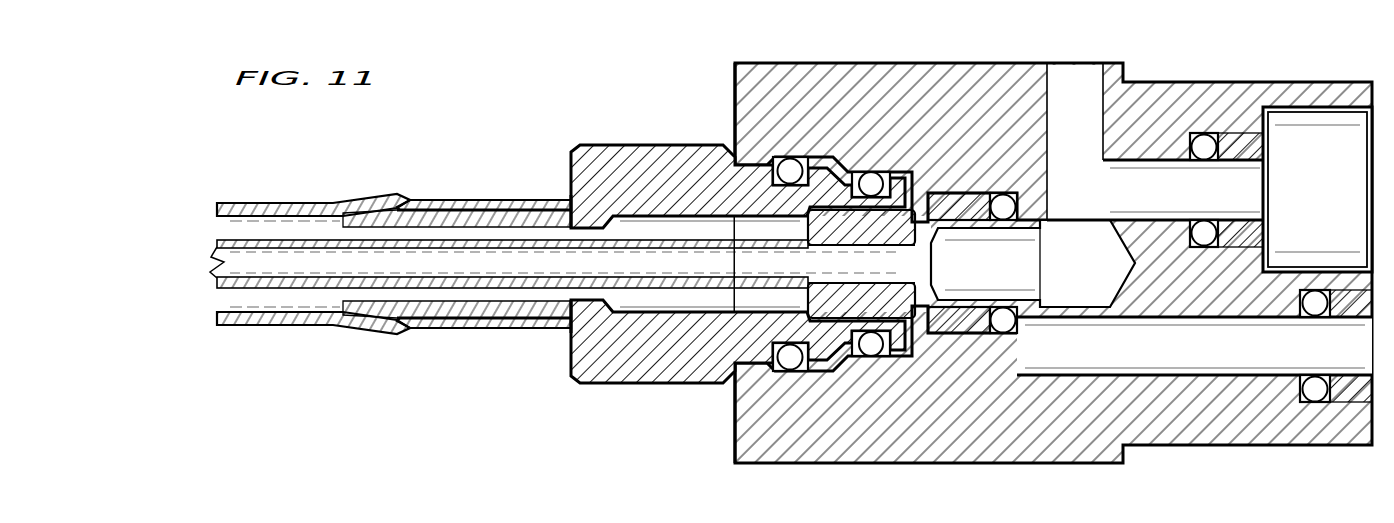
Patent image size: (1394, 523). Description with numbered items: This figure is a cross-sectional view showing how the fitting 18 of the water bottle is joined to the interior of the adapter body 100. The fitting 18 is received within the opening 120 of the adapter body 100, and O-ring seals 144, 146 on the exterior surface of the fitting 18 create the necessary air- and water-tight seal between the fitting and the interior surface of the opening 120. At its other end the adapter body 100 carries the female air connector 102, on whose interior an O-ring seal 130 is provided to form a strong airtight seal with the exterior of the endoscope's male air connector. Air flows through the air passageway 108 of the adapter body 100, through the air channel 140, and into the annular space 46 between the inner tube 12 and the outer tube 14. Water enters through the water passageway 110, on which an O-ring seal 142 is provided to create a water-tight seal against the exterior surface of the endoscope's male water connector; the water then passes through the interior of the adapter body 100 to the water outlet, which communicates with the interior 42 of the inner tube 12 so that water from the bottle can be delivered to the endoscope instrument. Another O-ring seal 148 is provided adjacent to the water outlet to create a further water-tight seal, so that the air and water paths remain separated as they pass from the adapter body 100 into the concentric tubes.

The inner tube 12 is at (298, 237).
The outer tube 14 is at (437, 198).
The fitting 18 is at (598, 147).
The interior of the inner tube 42 is at (407, 270).
The annular space 46 is at (283, 302).
The adapter body 100 is at (862, 62).
The female air connector 102 is at (1334, 201).
The air passageway 108 is at (1137, 357).
The water passageway 110 is at (1128, 163).
The opening 120 is at (810, 164).
The O-ring seal 130 is at (1315, 312).
The air channel 140 is at (848, 324).
The O-ring seal 142 is at (1198, 133).
The O-ring seal 144 is at (870, 352).
The O-ring seal 146 is at (787, 357).
The O-ring seal 148 is at (1010, 325).